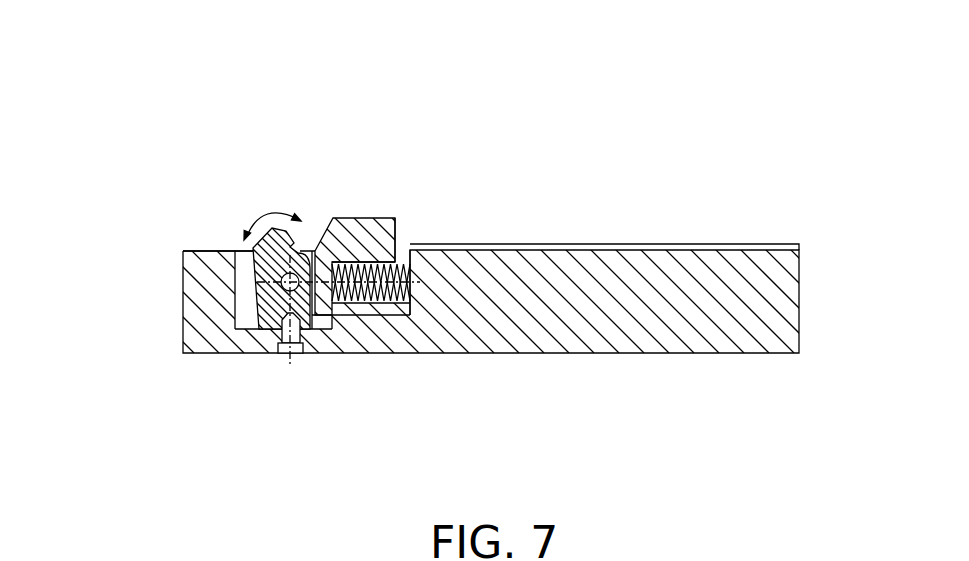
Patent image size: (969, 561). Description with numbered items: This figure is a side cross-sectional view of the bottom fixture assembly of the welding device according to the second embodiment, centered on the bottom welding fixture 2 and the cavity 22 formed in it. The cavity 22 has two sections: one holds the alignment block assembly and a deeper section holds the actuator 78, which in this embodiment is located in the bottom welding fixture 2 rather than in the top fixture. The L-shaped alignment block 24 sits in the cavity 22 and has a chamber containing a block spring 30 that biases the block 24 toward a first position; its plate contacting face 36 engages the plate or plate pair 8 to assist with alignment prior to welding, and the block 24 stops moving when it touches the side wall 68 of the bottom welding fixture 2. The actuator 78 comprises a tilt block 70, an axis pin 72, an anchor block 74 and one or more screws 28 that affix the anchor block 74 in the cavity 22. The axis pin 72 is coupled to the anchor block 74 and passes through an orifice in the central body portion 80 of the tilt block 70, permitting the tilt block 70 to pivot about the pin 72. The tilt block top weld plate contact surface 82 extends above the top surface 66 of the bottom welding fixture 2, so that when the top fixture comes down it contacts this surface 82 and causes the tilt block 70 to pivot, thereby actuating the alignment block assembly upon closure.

The bottom welding fixture 2 is at (620, 292).
The plate 8 is at (537, 246).
The bottom welding fixture cavity 22 is at (403, 255).
The L-shaped alignment block 24 is at (365, 218).
The screw 28 is at (299, 348).
The block spring 30 is at (381, 268).
The plate contacting face 36 is at (397, 255).
The top surface 66 is at (212, 250).
The side wall 68 is at (410, 302).
The tilt block 70 is at (262, 259).
The axis pin 72 is at (260, 288).
The anchor block 74 is at (265, 325).
The actuator 78 is at (245, 122).
The central body portion 80 is at (270, 287).
The tilt block top weld plate contact surface 82 is at (297, 216).